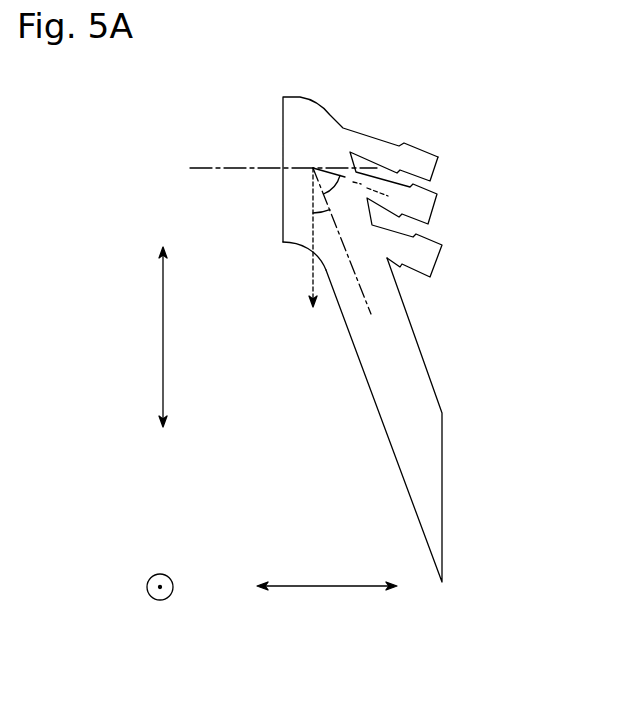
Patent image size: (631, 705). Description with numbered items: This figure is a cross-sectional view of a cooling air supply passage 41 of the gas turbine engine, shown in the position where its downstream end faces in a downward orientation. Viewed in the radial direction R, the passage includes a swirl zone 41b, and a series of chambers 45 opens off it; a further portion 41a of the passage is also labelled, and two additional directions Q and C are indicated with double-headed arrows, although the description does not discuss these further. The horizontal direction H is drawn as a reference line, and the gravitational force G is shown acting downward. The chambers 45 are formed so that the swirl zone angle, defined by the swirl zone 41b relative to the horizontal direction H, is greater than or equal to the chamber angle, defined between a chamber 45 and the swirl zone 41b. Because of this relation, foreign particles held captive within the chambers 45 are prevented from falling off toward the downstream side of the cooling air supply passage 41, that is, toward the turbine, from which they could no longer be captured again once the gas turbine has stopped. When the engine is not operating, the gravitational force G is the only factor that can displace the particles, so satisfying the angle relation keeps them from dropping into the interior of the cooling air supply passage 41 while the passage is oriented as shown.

The cooling air supply passage 41 is at (336, 112).
The chambers 45 is at (431, 182).
The base portion of blade 41a is at (287, 247).
The swirl zone 41b is at (383, 423).
The horizontal direction H is at (218, 167).
The gravitational force G is at (307, 278).
The vertical direction Q is at (160, 343).
The horizontal direction C is at (328, 588).
The radial direction R is at (160, 587).